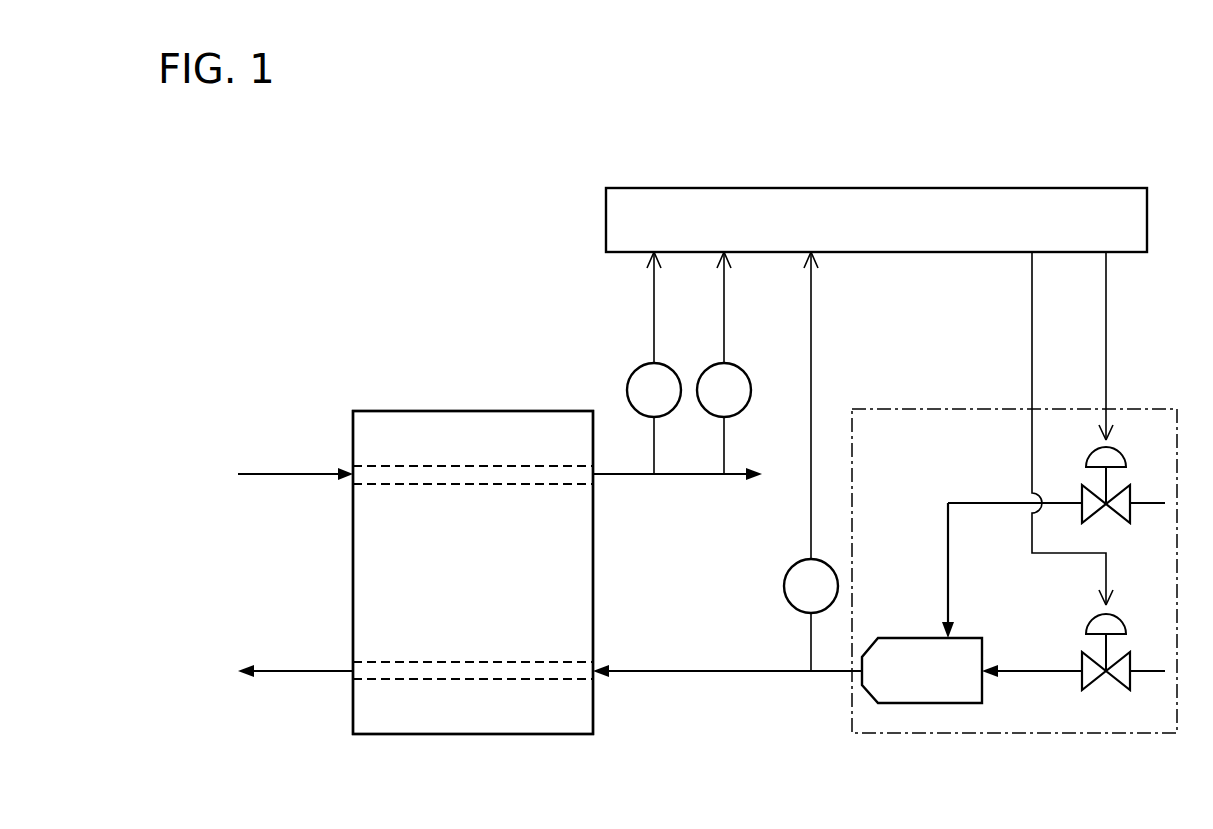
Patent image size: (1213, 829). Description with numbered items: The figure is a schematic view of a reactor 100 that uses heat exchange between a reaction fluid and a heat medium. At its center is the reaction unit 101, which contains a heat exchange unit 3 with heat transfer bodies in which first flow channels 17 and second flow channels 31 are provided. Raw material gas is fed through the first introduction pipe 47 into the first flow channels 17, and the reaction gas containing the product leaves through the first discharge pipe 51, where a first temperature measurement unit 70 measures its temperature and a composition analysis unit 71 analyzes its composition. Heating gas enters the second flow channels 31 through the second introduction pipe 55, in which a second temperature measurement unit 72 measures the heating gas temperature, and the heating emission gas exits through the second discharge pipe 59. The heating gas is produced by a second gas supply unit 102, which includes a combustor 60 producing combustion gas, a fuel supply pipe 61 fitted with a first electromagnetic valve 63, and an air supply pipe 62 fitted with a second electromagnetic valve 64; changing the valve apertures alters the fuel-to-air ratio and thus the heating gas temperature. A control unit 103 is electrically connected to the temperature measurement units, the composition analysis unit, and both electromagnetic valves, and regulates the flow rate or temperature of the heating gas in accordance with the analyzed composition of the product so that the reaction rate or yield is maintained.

The reactor 100 is at (376, 186).
The reaction unit 101 is at (504, 405).
The heat exchange unit 3 is at (433, 410).
The first flow channels 17 is at (449, 486).
The second flow channels 31 is at (452, 660).
The first introduction pipe 47 is at (271, 472).
The first discharge pipe 51 is at (762, 472).
The second introduction pipe 55 is at (690, 669).
The second discharge pipe 59 is at (271, 669).
The combustor 60 is at (912, 637).
The fuel supply pipe 61 is at (1160, 497).
The air supply pipe 62 is at (1160, 663).
The first electromagnetic valve 63 is at (1080, 495).
The second electromagnetic valve 64 is at (1080, 661).
The first temperature measurement unit 70 is at (680, 364).
The composition analysis unit 71 is at (752, 364).
The second temperature measurement unit 72 is at (786, 568).
The second gas supply unit 102 is at (1142, 408).
The control unit 103 is at (918, 187).